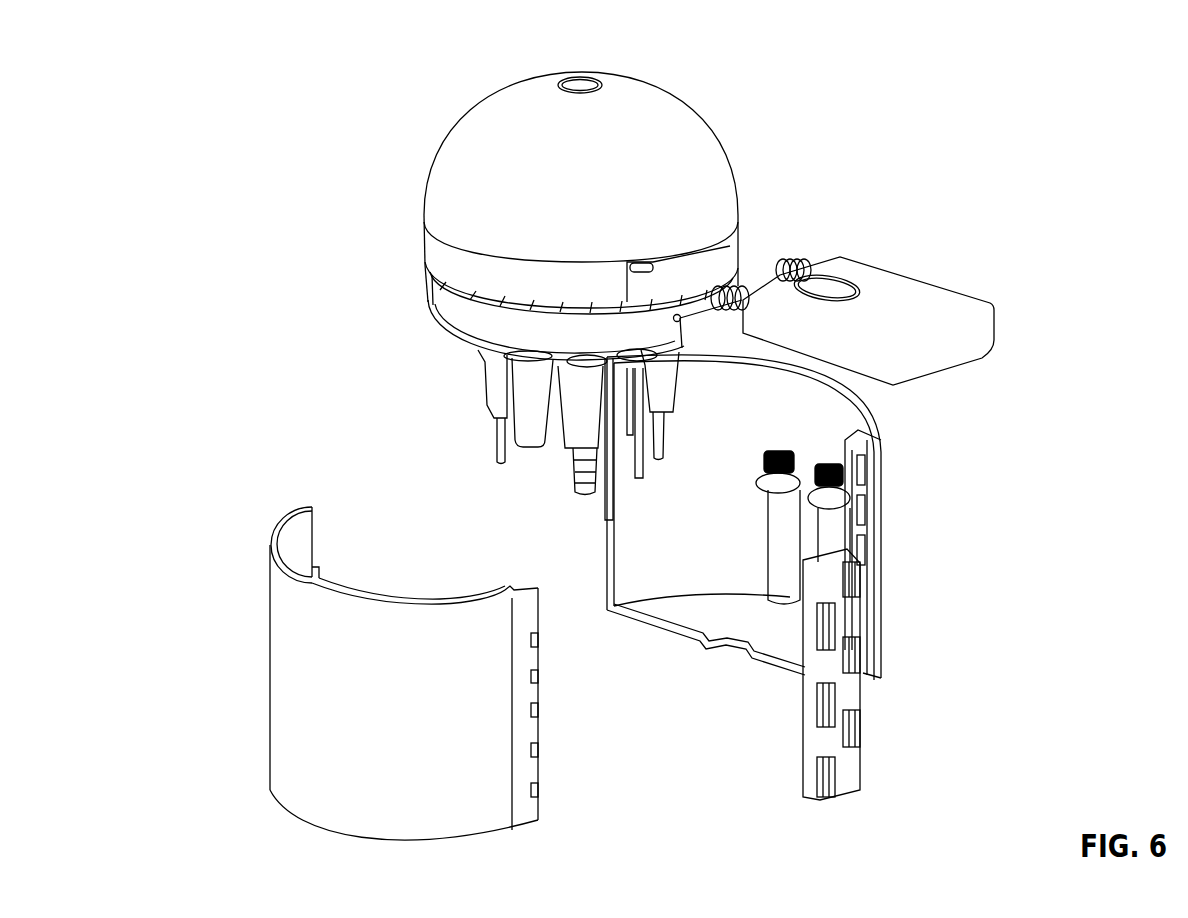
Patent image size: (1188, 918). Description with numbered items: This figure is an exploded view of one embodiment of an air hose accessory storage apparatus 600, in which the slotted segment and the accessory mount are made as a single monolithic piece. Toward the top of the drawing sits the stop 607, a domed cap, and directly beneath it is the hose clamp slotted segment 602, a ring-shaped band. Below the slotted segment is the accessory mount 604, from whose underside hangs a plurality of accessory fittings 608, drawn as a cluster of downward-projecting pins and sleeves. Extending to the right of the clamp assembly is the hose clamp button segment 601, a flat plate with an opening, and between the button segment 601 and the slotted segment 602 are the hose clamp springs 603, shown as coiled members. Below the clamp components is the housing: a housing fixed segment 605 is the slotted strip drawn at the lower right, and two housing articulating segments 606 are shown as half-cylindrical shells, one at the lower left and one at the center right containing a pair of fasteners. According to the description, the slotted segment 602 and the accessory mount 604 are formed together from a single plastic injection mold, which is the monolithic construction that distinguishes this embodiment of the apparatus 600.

The air hose accessory storage apparatus 600 is at (116, 76).
The hose clamp button segment 601 is at (864, 338).
The hose clamp slotted segment 602 is at (544, 290).
The hose clamp springs 603 is at (797, 262).
The accessory mount 604 is at (594, 345).
The housing fixed segment 605 is at (855, 797).
The housing articulating segments 606 is at (732, 482).
The stop 607 is at (611, 208).
The accessory fittings 608 is at (438, 380).